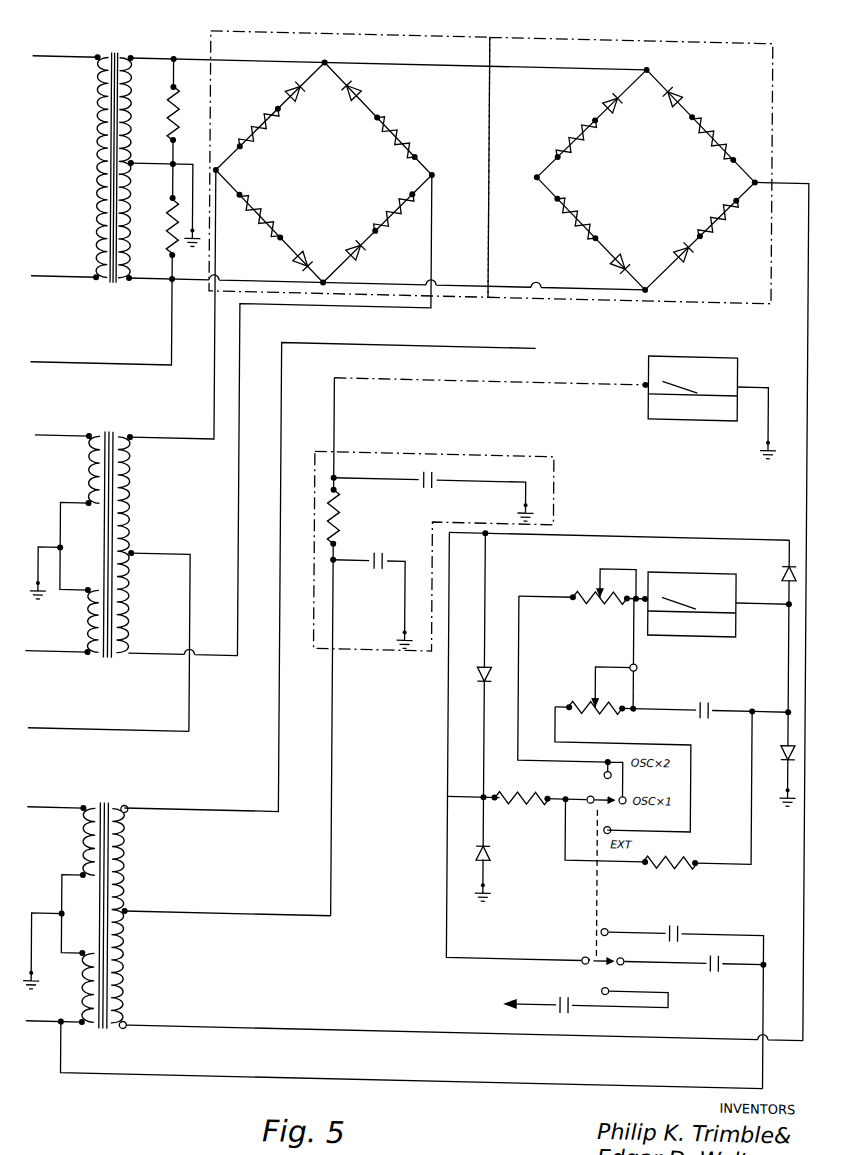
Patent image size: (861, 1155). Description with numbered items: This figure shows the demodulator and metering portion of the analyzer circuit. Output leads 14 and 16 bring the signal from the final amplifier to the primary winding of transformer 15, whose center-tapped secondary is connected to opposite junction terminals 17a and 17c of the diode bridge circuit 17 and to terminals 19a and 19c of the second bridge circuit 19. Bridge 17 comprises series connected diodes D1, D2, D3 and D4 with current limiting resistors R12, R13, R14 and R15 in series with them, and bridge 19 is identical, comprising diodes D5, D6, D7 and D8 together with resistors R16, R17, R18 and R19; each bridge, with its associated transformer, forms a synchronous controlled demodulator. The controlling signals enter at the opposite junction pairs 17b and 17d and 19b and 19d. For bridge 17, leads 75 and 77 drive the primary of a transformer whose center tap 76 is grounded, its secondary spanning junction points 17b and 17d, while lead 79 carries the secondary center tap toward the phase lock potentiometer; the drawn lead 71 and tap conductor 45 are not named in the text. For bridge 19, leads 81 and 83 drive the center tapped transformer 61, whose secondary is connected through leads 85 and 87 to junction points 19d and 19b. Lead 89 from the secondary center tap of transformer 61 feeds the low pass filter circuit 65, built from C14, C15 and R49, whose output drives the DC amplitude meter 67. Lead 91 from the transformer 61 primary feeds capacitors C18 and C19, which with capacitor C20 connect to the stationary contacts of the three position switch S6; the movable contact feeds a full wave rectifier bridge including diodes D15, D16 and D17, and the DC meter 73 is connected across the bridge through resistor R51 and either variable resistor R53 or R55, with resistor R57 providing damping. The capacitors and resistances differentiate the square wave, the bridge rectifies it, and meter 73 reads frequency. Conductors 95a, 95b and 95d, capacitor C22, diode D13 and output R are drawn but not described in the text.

The output lead 14 is at (58, 52).
The transformer 15 is at (121, 52).
The output lead 16 is at (75, 278).
The diode bridge circuit 17 is at (437, 25).
The junction terminal 17a is at (330, 56).
The junction terminal 17b is at (438, 165).
The junction terminal 17c is at (327, 280).
The junction terminal 17d is at (222, 166).
The current limiting resistor R12 is at (258, 118).
The current limiting resistor R13 is at (408, 125).
The current limiting resistor R14 is at (268, 212).
The current limiting resistor R15 is at (395, 198).
The diode D1 is at (298, 96).
The diode D2 is at (352, 92).
The diode D3 is at (296, 258).
The diode D4 is at (356, 238).
The second bridge circuit 19 is at (592, 26).
The junction terminal 19a is at (652, 56).
The junction terminal 19b is at (752, 166).
The junction terminal 19c is at (648, 280).
The junction terminal 19d is at (536, 162).
The resistor R16 is at (568, 124).
The resistor R17 is at (722, 125).
The resistor R18 is at (580, 218).
The resistor R19 is at (730, 203).
The diode D5 is at (618, 92).
The diode D6 is at (680, 84).
The diode D7 is at (625, 245).
The diode D8 is at (690, 242).
The DC amplitude meter 67 is at (720, 341).
The low pass filter circuit 65 is at (532, 443).
The capacitor C15 is at (426, 480).
The resistor R49 is at (343, 518).
The capacitor C14 is at (380, 562).
The conductor 95a is at (494, 526).
The lead 87 is at (806, 473).
The DC meter 73 is at (690, 556).
The diode D13 is at (788, 553).
The conductor 95b is at (790, 592).
The variable resistor R53 is at (588, 580).
The variable resistor R55 is at (582, 690).
The capacitor C22 is at (712, 690).
The diode D17 is at (780, 738).
The diode D15 is at (478, 664).
The resistor R51 is at (538, 784).
The conductor 95d is at (497, 800).
The diode D16 is at (492, 842).
The resistor R57 is at (690, 847).
The three position double pole switch S6 is at (598, 867).
The capacitor C18 is at (684, 916).
The capacitor C19 is at (722, 952).
The capacitor C20 is at (568, 996).
The output R is at (490, 995).
The conductor 71 is at (62, 433).
The lead 75 is at (115, 429).
The center tap 76 is at (60, 545).
The secondary tap conductor 45 is at (138, 550).
The lead 77 is at (75, 652).
The lead 79 is at (100, 727).
The lead 81 is at (56, 806).
The center tapped transformer 61 is at (118, 802).
The lead 85 is at (260, 805).
The lead 89 is at (226, 908).
The lead 83 is at (45, 1025).
The lead 91 is at (370, 1070).